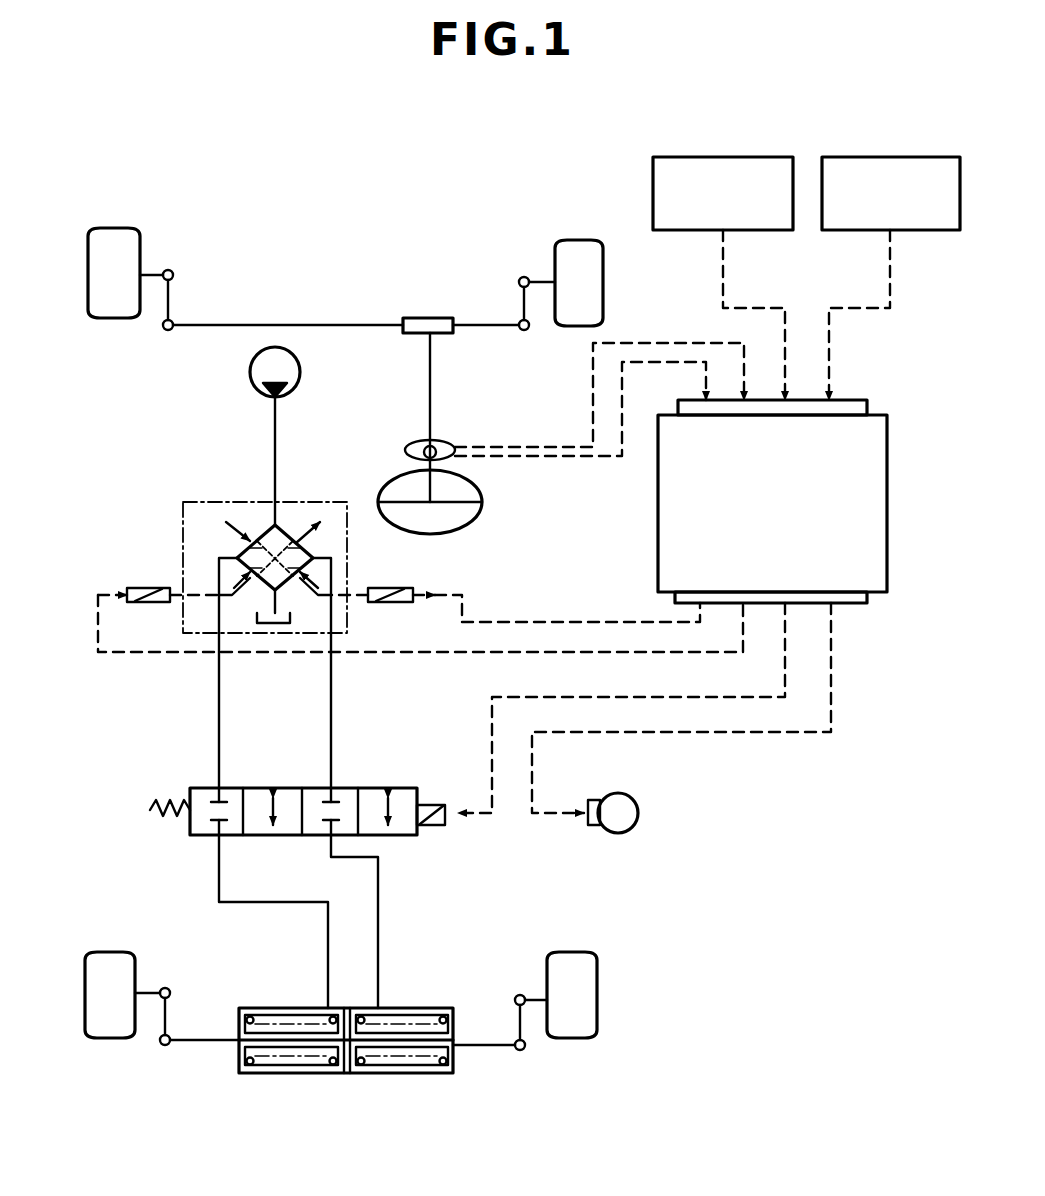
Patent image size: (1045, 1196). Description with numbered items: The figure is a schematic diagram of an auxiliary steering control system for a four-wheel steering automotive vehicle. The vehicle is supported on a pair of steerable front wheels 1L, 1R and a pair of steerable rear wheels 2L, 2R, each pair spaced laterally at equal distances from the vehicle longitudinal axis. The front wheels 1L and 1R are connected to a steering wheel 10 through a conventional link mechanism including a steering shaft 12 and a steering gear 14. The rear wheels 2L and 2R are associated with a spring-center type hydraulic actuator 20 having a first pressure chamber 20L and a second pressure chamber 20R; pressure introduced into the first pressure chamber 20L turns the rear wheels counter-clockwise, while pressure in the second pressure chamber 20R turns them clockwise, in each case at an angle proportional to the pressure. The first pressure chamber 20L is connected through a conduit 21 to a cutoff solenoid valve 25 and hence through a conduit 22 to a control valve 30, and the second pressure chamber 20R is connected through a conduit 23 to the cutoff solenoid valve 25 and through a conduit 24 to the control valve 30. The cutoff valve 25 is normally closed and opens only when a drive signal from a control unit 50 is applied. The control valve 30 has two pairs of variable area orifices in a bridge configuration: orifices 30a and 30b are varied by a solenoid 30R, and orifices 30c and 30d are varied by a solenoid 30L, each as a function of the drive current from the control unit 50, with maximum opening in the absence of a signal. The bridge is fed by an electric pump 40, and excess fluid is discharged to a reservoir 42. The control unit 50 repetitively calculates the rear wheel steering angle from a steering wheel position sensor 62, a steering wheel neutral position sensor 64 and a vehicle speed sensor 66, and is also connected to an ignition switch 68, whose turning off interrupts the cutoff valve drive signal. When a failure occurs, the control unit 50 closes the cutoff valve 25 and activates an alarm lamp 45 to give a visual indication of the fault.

The left front wheel 1L is at (120, 230).
The right front wheel 1R is at (572, 240).
The left rear wheel 2L is at (115, 1040).
The right rear wheel 2R is at (572, 1040).
The steering wheel 10 is at (482, 500).
The steering shaft 12 is at (435, 355).
The steering gear 14 is at (418, 318).
The hydraulic actuator 20 is at (355, 1038).
The first pressure chamber 20L is at (280, 1015).
The second pressure chamber 20R is at (418, 1015).
The conduit 21 is at (215, 880).
The conduit 22 is at (219, 707).
The conduit 23 is at (380, 912).
The conduit 24 is at (331, 712).
The cutoff solenoid valve 25 is at (375, 788).
The control valve 30 is at (420, 551).
The variable area orifice 30a is at (252, 538).
The variable area orifice 30b is at (300, 578).
The variable area orifice 30c is at (256, 580).
The variable area orifice 30d is at (300, 538).
The solenoid 30L is at (143, 588).
The solenoid 30R is at (395, 588).
The electric pump 40 is at (250, 370).
The reservoir 42 is at (280, 627).
The alarm lamp 45 is at (638, 800).
The control unit 50 is at (898, 432).
The steering wheel position sensor 62 is at (437, 448).
The steering wheel neutral position sensor 64 is at (428, 448).
The vehicle speed sensor 66 is at (735, 157).
The ignition switch 68 is at (907, 157).